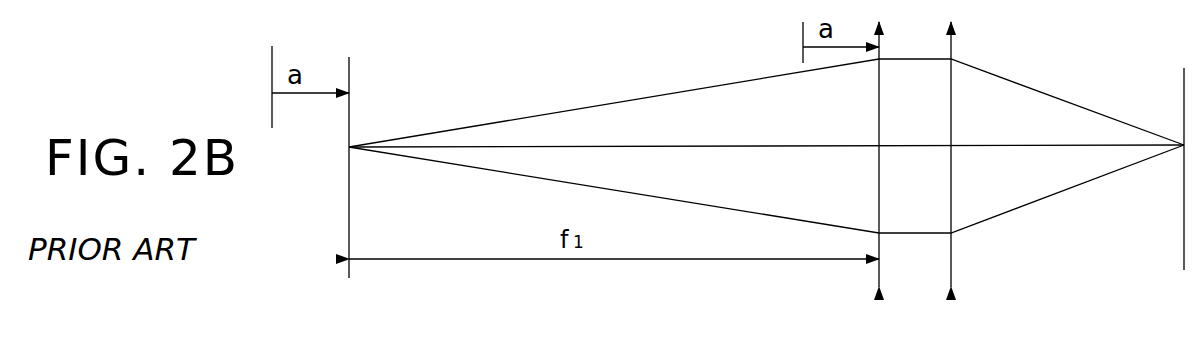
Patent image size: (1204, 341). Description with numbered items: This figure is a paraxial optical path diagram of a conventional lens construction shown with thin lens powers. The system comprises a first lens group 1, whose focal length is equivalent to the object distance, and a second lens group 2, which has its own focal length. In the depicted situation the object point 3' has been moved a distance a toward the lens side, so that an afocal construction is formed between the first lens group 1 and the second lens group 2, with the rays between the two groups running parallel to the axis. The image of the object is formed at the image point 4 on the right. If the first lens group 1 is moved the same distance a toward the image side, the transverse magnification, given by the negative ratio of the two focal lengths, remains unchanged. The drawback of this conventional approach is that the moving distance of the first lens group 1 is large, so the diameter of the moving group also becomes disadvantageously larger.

The first lens group 1 is at (880, 171).
The second lens group 2 is at (945, 171).
The object point 3' is at (351, 185).
The image point 4 is at (1180, 190).